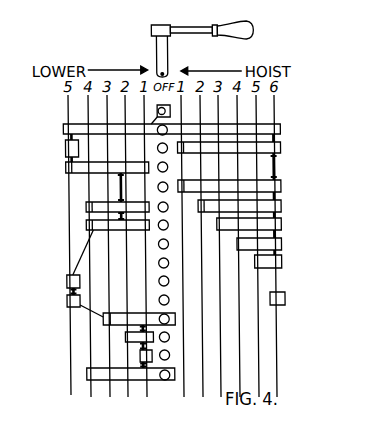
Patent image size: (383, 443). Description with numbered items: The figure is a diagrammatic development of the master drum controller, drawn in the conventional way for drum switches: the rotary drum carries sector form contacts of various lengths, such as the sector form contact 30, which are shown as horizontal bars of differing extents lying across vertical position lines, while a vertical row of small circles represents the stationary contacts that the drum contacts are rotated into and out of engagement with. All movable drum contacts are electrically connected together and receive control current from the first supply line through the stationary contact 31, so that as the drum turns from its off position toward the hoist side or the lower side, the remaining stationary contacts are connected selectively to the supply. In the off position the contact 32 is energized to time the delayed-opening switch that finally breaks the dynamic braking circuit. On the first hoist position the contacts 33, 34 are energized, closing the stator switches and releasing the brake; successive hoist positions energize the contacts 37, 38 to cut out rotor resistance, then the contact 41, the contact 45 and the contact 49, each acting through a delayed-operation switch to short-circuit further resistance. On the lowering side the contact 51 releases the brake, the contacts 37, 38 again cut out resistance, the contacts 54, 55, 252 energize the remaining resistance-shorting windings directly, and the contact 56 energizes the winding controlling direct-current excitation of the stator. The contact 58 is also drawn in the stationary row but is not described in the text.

The sector form contact 30 is at (277, 124).
The stationary contact 31 is at (167, 127).
The contact 32 is at (156, 110).
The contact 33 is at (157, 148).
The contact 34 is at (157, 187).
The contact 37 is at (166, 209).
The contact 38 is at (166, 227).
The contact 41 is at (166, 245).
The contact 45 is at (157, 263).
The contact 49 is at (166, 299).
The contact 51 is at (167, 167).
The contact 54 is at (167, 318).
The contact 55 is at (167, 337).
The contact 56 is at (167, 375).
The contact finger 58 is at (166, 279).
The contact 252 is at (167, 355).